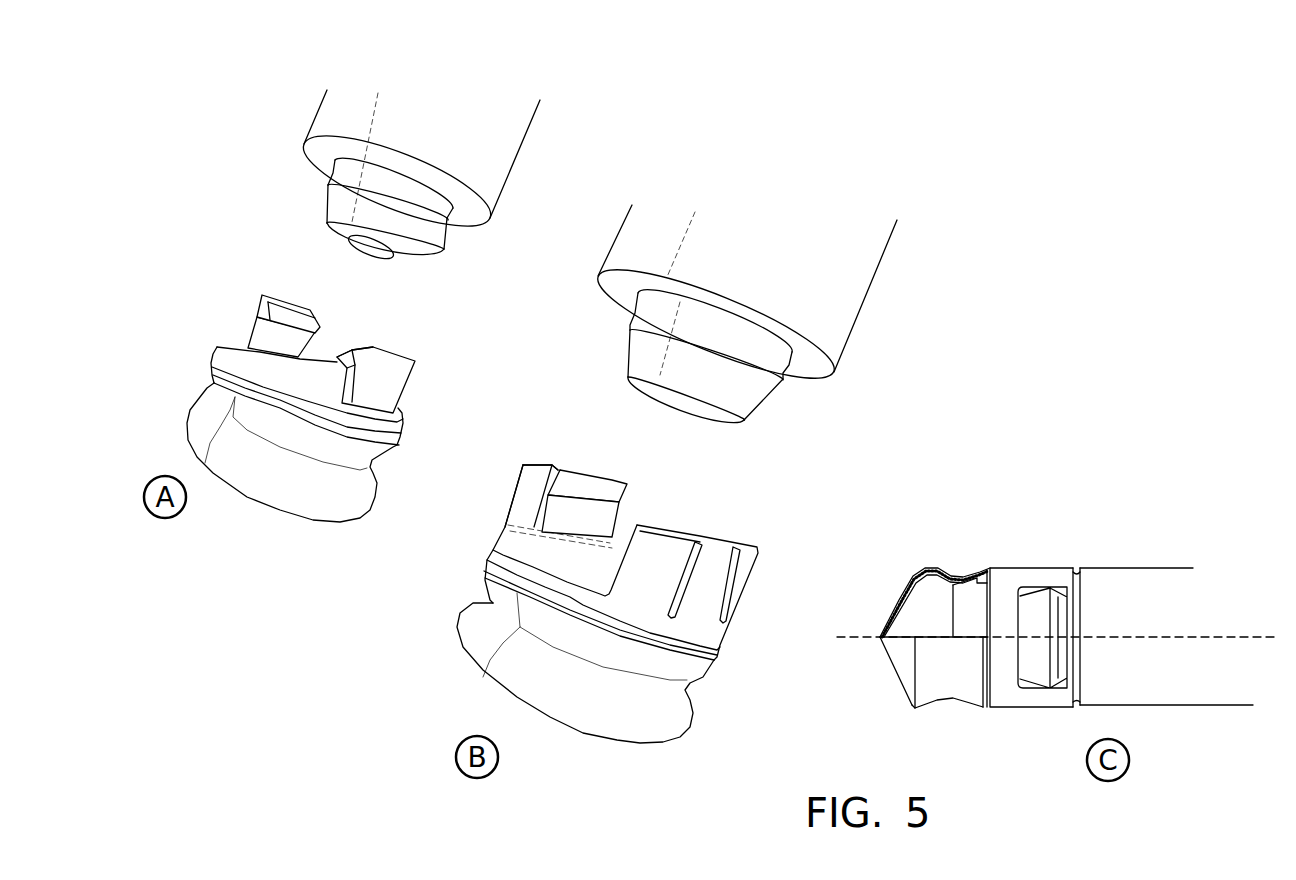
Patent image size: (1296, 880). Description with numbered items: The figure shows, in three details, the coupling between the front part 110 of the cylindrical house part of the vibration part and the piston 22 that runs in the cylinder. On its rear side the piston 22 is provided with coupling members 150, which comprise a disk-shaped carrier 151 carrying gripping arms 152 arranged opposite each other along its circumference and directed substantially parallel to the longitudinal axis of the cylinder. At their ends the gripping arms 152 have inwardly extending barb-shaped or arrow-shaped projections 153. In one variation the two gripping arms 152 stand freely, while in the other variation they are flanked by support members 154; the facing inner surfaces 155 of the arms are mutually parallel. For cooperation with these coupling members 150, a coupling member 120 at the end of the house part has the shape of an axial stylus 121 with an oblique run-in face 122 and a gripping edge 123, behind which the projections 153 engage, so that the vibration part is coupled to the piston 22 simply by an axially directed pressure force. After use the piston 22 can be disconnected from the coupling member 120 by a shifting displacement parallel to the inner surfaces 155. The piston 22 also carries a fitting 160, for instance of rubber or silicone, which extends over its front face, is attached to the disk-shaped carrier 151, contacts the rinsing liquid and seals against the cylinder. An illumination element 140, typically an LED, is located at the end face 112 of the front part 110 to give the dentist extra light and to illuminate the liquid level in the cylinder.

The piston 22 is at (588, 563).
The front part 110 is at (873, 277).
The end face 112 is at (376, 237).
The coupling member 120 is at (728, 356).
The axial stylus 121 is at (660, 396).
The oblique run-in face 122 is at (633, 350).
The gripping edge 123 is at (630, 323).
The illumination element 140 is at (363, 247).
The coupling members 150 is at (446, 380).
The disk-shaped carrier 151 is at (225, 363).
The gripping arms 152 is at (410, 390).
The barb-shaped projections 153 is at (352, 351).
The support members 154 is at (530, 496).
The inner surfaces 155 is at (278, 338).
The fitting 160 is at (897, 603).